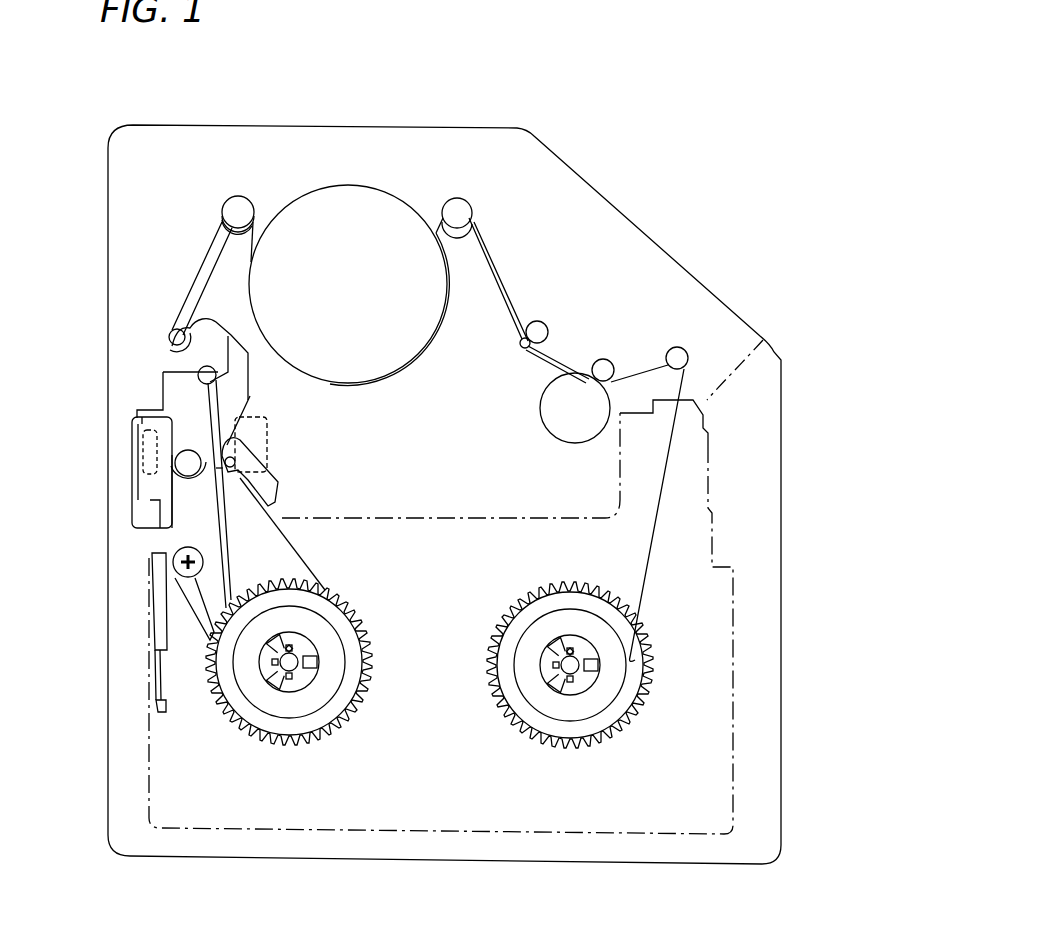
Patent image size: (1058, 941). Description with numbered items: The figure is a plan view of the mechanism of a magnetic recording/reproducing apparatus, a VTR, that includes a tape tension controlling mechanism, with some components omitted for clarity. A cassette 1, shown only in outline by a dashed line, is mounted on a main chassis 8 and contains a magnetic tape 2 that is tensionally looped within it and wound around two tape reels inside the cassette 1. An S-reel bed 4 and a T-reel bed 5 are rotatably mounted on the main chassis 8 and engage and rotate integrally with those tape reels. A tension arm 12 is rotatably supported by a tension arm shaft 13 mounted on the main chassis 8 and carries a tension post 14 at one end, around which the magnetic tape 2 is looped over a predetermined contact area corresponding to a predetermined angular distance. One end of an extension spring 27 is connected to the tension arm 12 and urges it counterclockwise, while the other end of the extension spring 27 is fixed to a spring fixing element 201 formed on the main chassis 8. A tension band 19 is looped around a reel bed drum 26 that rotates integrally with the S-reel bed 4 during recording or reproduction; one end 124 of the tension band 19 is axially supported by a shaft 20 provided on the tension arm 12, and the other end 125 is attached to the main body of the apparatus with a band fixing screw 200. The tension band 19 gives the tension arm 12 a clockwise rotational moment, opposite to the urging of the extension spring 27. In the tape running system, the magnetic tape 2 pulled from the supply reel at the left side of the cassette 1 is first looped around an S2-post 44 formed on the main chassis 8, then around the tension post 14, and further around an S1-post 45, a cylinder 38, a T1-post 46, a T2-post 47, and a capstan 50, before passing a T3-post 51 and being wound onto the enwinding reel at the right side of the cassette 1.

The cassette 1 is at (763, 340).
The magnetic tape 2 is at (207, 242).
The S-reel bed 4 is at (268, 744).
The T-reel bed 5 is at (556, 746).
The main chassis 8 is at (222, 125).
The tension arm 12 is at (193, 330).
The tension arm shaft 13 is at (175, 460).
The tension post 14 is at (169, 333).
The tension band 19 is at (305, 560).
The shaft 20 is at (236, 458).
The reel bed drum 26 is at (347, 713).
The extension spring 27 is at (148, 598).
The cylinder 38 is at (346, 186).
The S2-post 44 is at (198, 374).
The S1-post 45 is at (244, 198).
The T1-post 46 is at (456, 198).
The T2-post 47 is at (545, 322).
The capstan 50 is at (610, 359).
The T3-post 51 is at (684, 348).
The one end of the tension band 124 is at (283, 486).
The other end of the tension band 125 is at (185, 596).
The band fixing screw 200 is at (173, 554).
The spring fixing element 201 is at (162, 714).